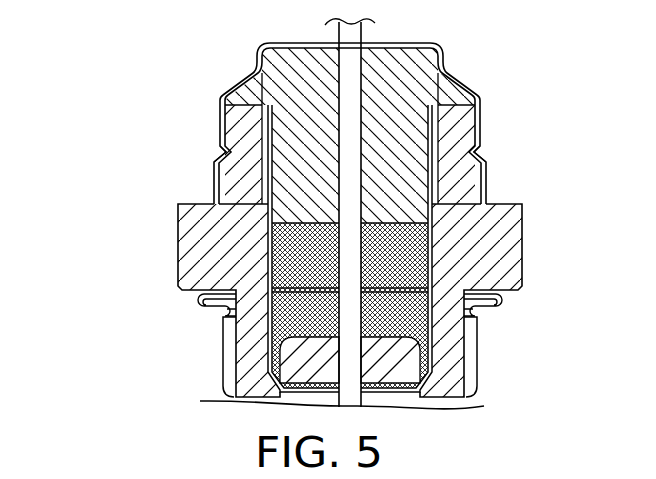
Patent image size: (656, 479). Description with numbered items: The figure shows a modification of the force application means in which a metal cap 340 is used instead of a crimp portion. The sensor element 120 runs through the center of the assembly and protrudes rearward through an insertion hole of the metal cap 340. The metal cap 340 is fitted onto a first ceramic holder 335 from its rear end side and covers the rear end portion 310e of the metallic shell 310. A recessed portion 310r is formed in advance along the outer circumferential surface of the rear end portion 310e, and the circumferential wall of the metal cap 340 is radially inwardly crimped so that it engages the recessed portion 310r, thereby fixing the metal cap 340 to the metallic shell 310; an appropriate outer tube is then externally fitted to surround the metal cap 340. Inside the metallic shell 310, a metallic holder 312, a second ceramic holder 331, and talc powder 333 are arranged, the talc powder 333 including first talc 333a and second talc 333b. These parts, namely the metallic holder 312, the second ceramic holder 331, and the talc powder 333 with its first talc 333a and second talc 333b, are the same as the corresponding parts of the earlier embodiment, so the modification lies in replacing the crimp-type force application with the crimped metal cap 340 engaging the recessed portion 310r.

The sensor element 120 is at (339, 70).
The metallic shell 310 is at (523, 268).
The rear end portion 310e is at (265, 92).
The recessed portion 310r is at (200, 152).
The metallic holder 312 is at (447, 356).
The second ceramic holder 331 is at (240, 383).
The talc powder 333 is at (219, 305).
The first talc 333a is at (285, 356).
The second talc 333b is at (270, 250).
The first ceramic holder 335 is at (290, 152).
The metal cap 340 is at (220, 113).